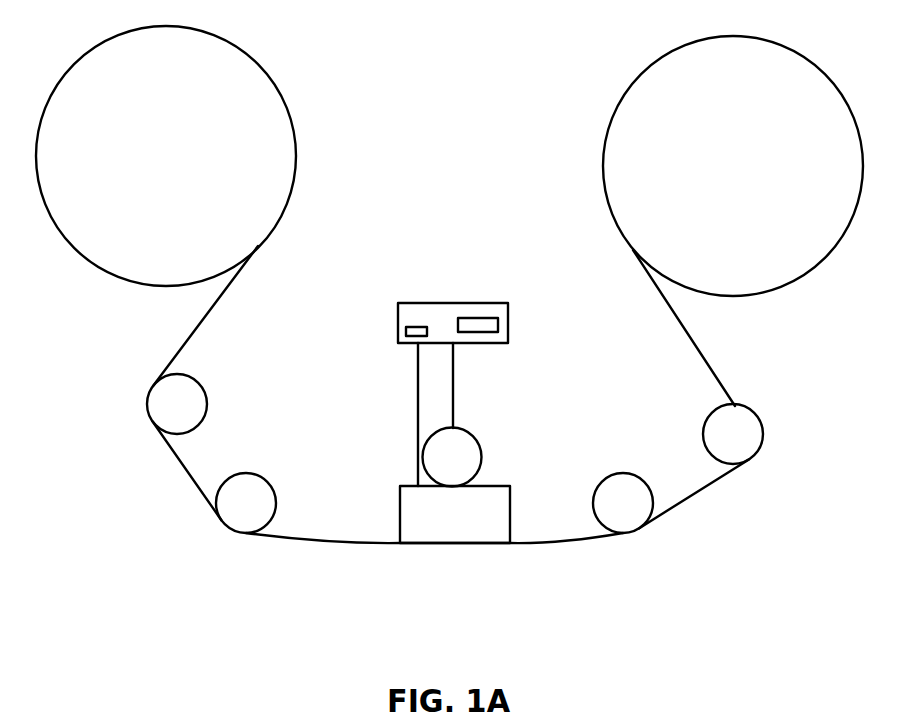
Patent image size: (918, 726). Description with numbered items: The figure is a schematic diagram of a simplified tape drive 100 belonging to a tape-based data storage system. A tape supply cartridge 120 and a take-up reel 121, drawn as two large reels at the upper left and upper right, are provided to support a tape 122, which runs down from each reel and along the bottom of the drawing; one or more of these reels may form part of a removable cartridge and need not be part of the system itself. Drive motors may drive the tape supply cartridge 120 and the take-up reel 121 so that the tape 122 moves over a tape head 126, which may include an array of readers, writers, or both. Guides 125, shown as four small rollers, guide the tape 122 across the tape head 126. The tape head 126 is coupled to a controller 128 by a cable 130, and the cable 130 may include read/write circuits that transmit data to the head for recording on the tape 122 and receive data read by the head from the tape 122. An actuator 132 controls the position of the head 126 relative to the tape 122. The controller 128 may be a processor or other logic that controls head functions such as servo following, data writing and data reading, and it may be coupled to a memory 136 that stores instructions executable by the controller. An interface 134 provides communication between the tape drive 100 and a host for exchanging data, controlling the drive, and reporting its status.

The tape drive 100 is at (137, 343).
The tape supply cartridge 120 is at (293, 130).
The take-up reel 121 is at (813, 270).
The tape 122 is at (323, 541).
The guides 125 is at (247, 473).
The tape head 126 is at (510, 517).
The controller 128 is at (450, 303).
The cable 130 is at (417, 455).
The actuator 132 is at (477, 433).
The interface 134 is at (487, 318).
The memory 136 is at (416, 327).